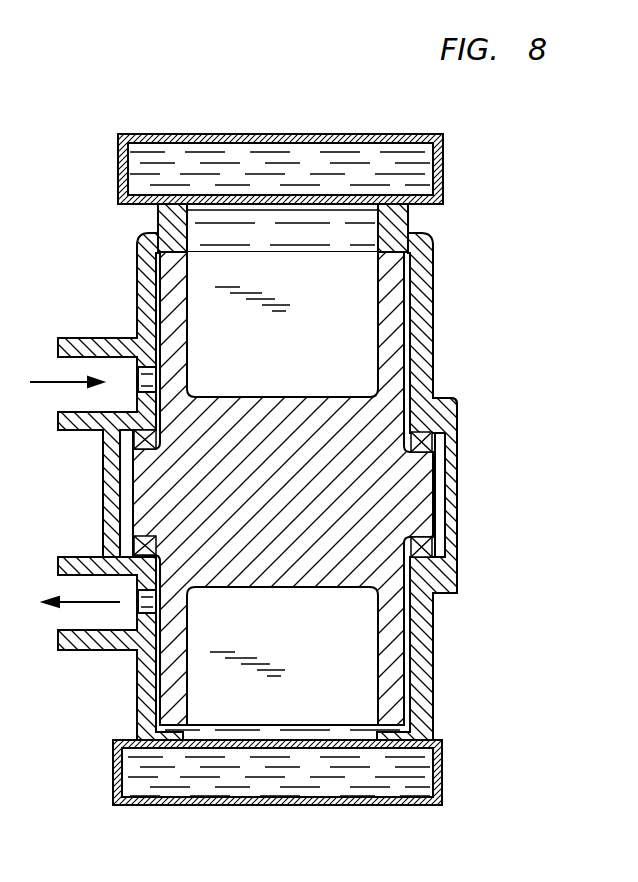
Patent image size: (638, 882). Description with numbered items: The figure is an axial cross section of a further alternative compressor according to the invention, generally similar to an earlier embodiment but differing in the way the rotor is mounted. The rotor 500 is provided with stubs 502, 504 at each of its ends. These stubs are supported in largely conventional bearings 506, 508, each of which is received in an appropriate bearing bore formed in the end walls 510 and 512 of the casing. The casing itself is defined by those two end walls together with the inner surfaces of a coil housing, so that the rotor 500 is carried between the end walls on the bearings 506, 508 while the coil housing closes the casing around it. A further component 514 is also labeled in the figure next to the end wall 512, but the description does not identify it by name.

The rotor 500 is at (315, 645).
The stub 502 is at (130, 499).
The stub 504 is at (432, 484).
The bearing 506 is at (140, 548).
The bearing 508 is at (432, 540).
The end wall 510 is at (140, 683).
The end wall 512 is at (424, 683).
The flange 514 is at (457, 577).